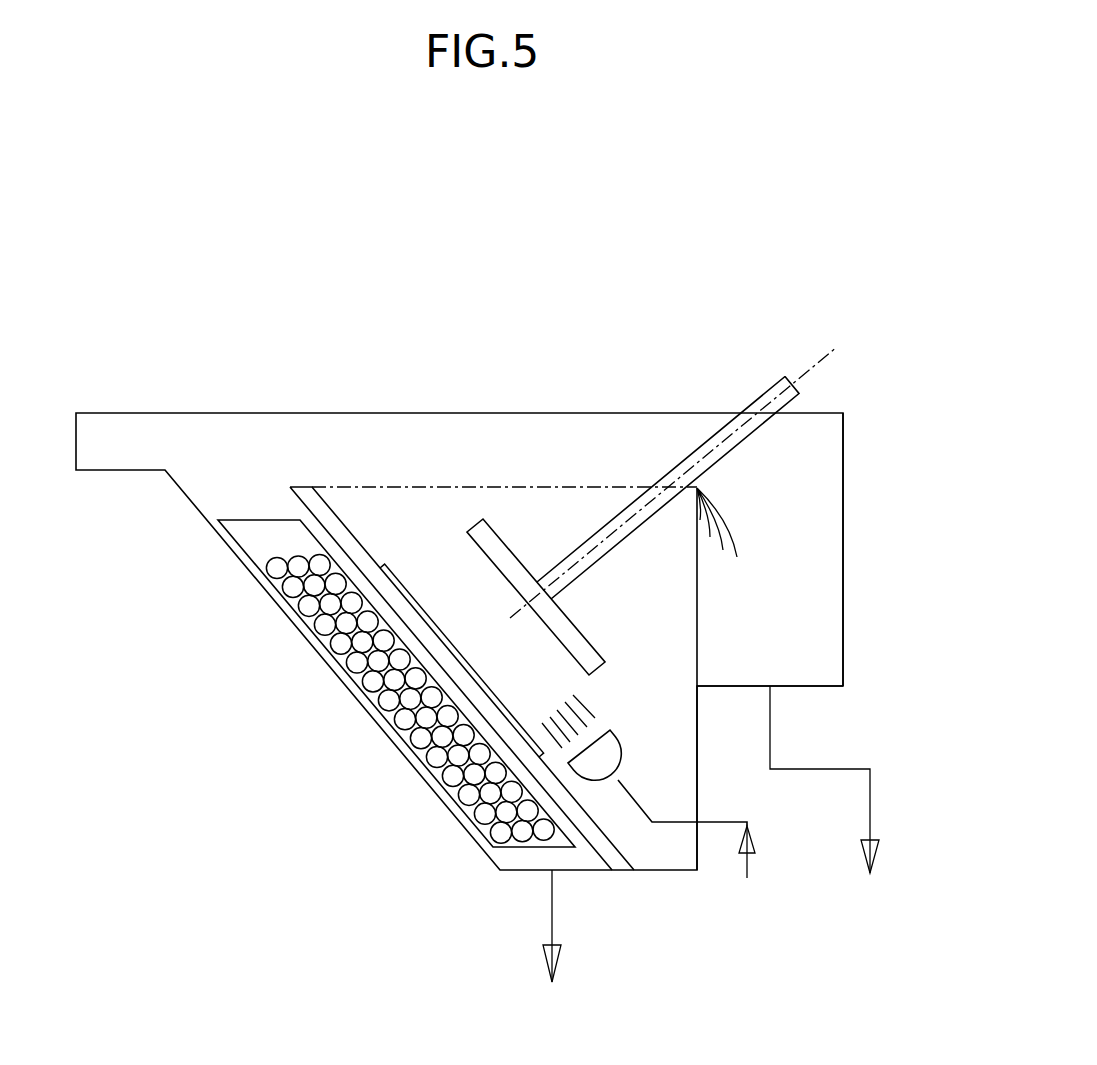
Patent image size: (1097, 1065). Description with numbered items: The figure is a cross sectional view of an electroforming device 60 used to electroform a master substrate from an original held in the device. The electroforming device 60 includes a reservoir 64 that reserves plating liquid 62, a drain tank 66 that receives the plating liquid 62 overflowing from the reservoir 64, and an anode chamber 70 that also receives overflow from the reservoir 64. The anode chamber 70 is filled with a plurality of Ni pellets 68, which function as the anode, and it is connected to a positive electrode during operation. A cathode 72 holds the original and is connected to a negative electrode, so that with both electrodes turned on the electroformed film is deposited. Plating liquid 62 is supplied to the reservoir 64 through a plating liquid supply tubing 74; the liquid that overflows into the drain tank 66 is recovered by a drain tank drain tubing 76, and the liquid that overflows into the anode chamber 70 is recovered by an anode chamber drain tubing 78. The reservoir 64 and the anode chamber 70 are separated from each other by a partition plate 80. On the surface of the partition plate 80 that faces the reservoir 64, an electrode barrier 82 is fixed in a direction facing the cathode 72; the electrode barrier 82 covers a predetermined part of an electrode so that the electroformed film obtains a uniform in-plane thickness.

The electroforming device 60 is at (673, 379).
The plating liquid 62 is at (668, 783).
The reservoir 64 is at (697, 621).
The drain tank 66 is at (843, 488).
The Ni pellets 68 is at (405, 722).
The anode chamber 70 is at (248, 520).
The cathode 72 is at (490, 542).
The plating liquid supply tubing 74 is at (720, 823).
The drain tank drain tubing 76 is at (872, 789).
The anode chamber drain tubing 78 is at (551, 909).
The partition plate 80 is at (320, 517).
The electrode barrier 82 is at (397, 580).